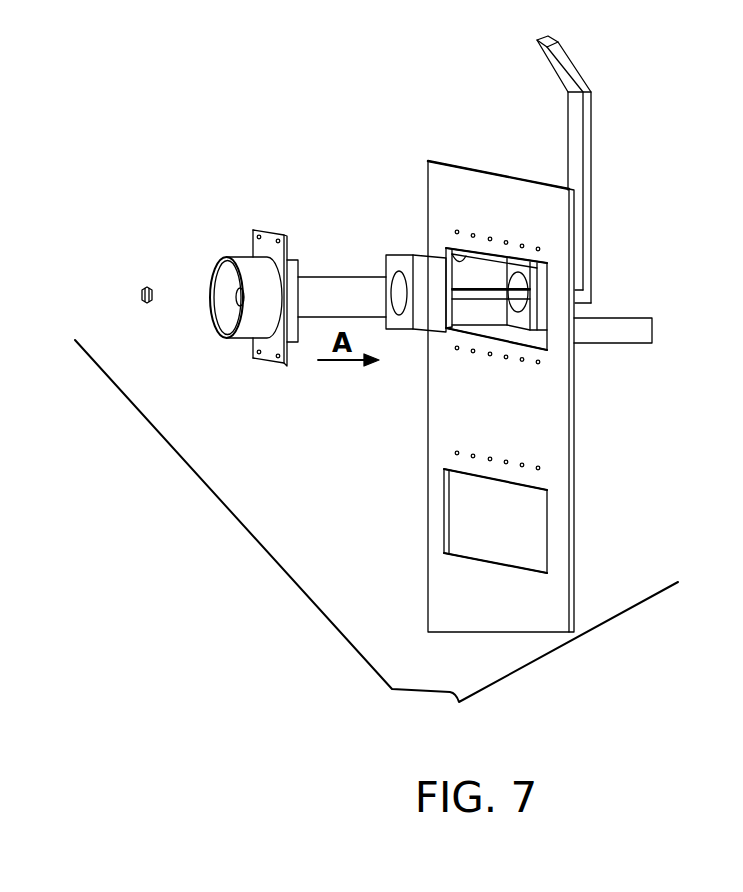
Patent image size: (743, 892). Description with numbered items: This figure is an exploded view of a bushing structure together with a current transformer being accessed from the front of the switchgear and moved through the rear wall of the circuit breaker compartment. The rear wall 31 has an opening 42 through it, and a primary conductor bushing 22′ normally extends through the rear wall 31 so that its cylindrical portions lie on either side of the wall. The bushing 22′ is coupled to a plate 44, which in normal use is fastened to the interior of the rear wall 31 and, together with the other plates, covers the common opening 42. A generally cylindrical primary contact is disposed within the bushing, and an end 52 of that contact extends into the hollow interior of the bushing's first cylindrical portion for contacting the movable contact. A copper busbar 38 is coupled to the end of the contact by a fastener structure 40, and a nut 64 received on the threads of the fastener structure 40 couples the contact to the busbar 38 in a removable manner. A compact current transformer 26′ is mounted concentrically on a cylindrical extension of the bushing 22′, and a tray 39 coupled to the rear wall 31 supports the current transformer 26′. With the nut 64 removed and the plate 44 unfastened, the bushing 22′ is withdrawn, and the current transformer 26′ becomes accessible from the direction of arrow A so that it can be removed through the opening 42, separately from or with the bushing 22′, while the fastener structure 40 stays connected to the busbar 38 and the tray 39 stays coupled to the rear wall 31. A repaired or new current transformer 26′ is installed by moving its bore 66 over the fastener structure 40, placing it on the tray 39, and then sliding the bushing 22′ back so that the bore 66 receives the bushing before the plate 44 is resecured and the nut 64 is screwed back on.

The primary conductor bushing 22′ is at (339, 277).
The current transformer 26′ is at (442, 327).
The rear wall 31 is at (437, 604).
The copper busbar 38 is at (588, 115).
The tray 39 is at (652, 330).
The fastener structure 40 is at (494, 283).
The opening 42 is at (458, 253).
The plate 44 is at (268, 229).
The end of the contact 52 is at (237, 295).
The nut 64 is at (149, 305).
The bore of the current transformer 66 is at (399, 255).